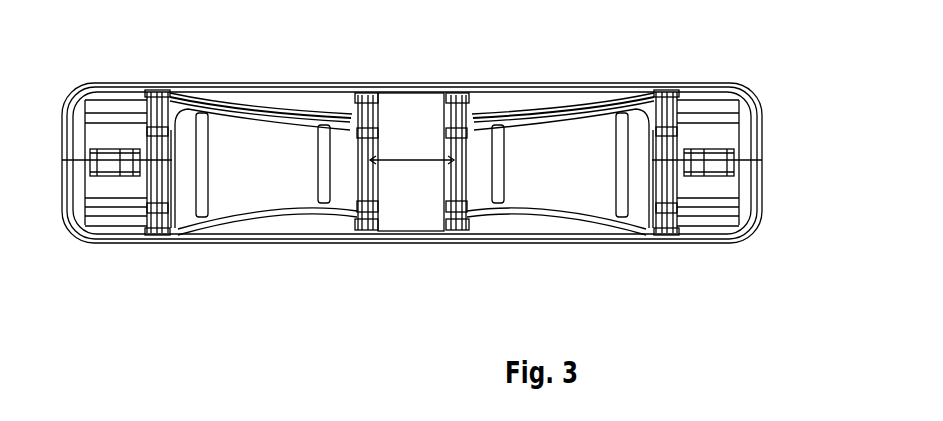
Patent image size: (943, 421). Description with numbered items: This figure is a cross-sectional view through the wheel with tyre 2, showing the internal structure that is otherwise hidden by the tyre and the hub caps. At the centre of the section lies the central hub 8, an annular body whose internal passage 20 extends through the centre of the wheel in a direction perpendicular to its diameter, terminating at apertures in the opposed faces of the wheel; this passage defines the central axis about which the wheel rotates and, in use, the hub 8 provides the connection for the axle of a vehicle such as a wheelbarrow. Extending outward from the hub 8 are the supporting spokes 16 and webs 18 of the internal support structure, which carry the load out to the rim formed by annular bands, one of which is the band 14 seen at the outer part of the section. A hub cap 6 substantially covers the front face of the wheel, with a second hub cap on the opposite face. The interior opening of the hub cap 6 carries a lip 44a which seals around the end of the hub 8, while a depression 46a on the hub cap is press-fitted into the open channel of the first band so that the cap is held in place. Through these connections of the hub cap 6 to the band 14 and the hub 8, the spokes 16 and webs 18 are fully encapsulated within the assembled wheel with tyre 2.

The wheel with tyre 2 is at (641, 64).
The hub cap 6 is at (257, 113).
The central hub 8 is at (408, 78).
The annular band 14 is at (740, 148).
The spokes 16 is at (290, 160).
The webs 18 is at (125, 150).
The internal passage 20 is at (425, 145).
The lip 44a is at (467, 103).
The depression 46a is at (173, 104).